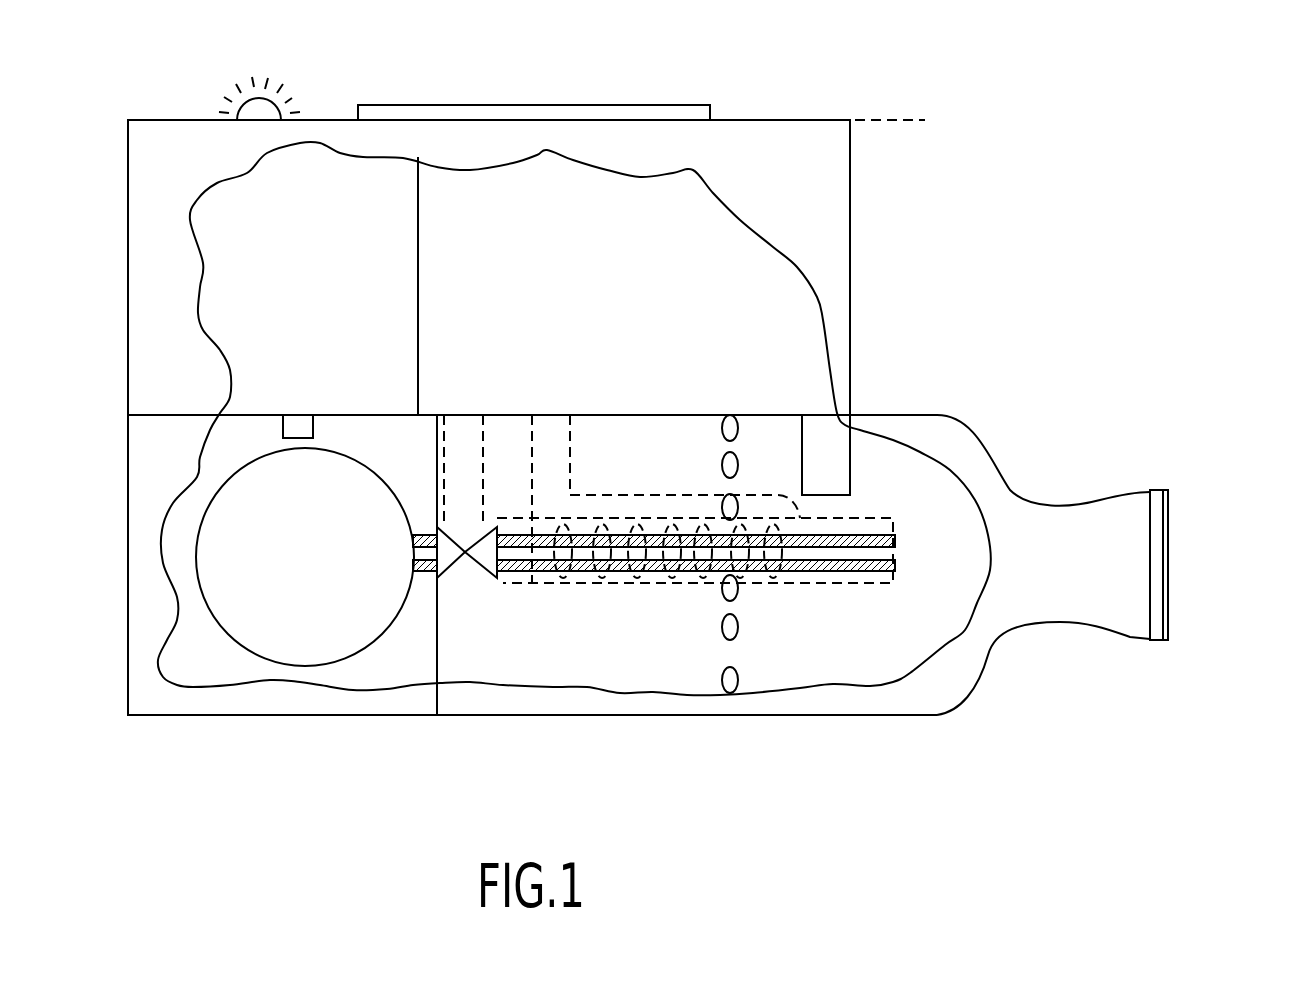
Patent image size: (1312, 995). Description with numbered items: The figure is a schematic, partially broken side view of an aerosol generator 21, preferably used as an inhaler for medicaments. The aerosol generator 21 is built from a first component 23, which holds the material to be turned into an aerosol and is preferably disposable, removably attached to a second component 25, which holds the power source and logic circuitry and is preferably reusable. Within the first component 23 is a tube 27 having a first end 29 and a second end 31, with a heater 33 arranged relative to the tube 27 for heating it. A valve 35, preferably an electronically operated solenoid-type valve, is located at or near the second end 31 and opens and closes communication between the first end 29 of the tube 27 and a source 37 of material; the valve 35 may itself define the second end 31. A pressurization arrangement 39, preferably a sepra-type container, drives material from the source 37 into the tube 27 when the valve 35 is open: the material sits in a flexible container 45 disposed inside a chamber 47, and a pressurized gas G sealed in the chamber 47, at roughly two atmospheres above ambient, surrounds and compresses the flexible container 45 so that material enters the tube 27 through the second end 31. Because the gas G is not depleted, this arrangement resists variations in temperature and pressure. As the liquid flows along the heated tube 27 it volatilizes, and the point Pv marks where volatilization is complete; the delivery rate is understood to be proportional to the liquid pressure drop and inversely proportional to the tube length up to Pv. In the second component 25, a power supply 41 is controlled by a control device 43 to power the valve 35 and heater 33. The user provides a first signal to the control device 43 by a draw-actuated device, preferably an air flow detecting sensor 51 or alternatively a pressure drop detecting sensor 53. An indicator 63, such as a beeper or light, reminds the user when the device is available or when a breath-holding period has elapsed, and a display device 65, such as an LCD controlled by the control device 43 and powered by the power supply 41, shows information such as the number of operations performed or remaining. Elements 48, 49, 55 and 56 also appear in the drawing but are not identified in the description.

The aerosol generator 21 is at (672, 60).
The first component 23 is at (955, 403).
The second component 25 is at (818, 108).
The tube 27 is at (858, 594).
The first end 29 is at (897, 548).
The second end 31 is at (415, 553).
The heater 33 is at (605, 584).
The valve 35 is at (497, 578).
The source of material 37 is at (310, 686).
The pressurization arrangement 39 is at (237, 688).
The power supply 41 is at (630, 293).
The control device 43 is at (330, 265).
The flexible container 45 is at (375, 645).
The chamber 47 is at (193, 688).
The sensor 48 is at (297, 426).
The lower chamber 49 is at (937, 715).
The air flow detecting sensor 51 is at (836, 455).
The pressure drop detecting sensor 53 is at (1168, 565).
The bubbles 55 is at (730, 697).
The heater enclosure 56 is at (880, 518).
The indicator 63 is at (278, 97).
The display device 65 is at (503, 105).
The pressurized gas G is at (182, 471).
The point of complete volatilization Pv is at (695, 560).